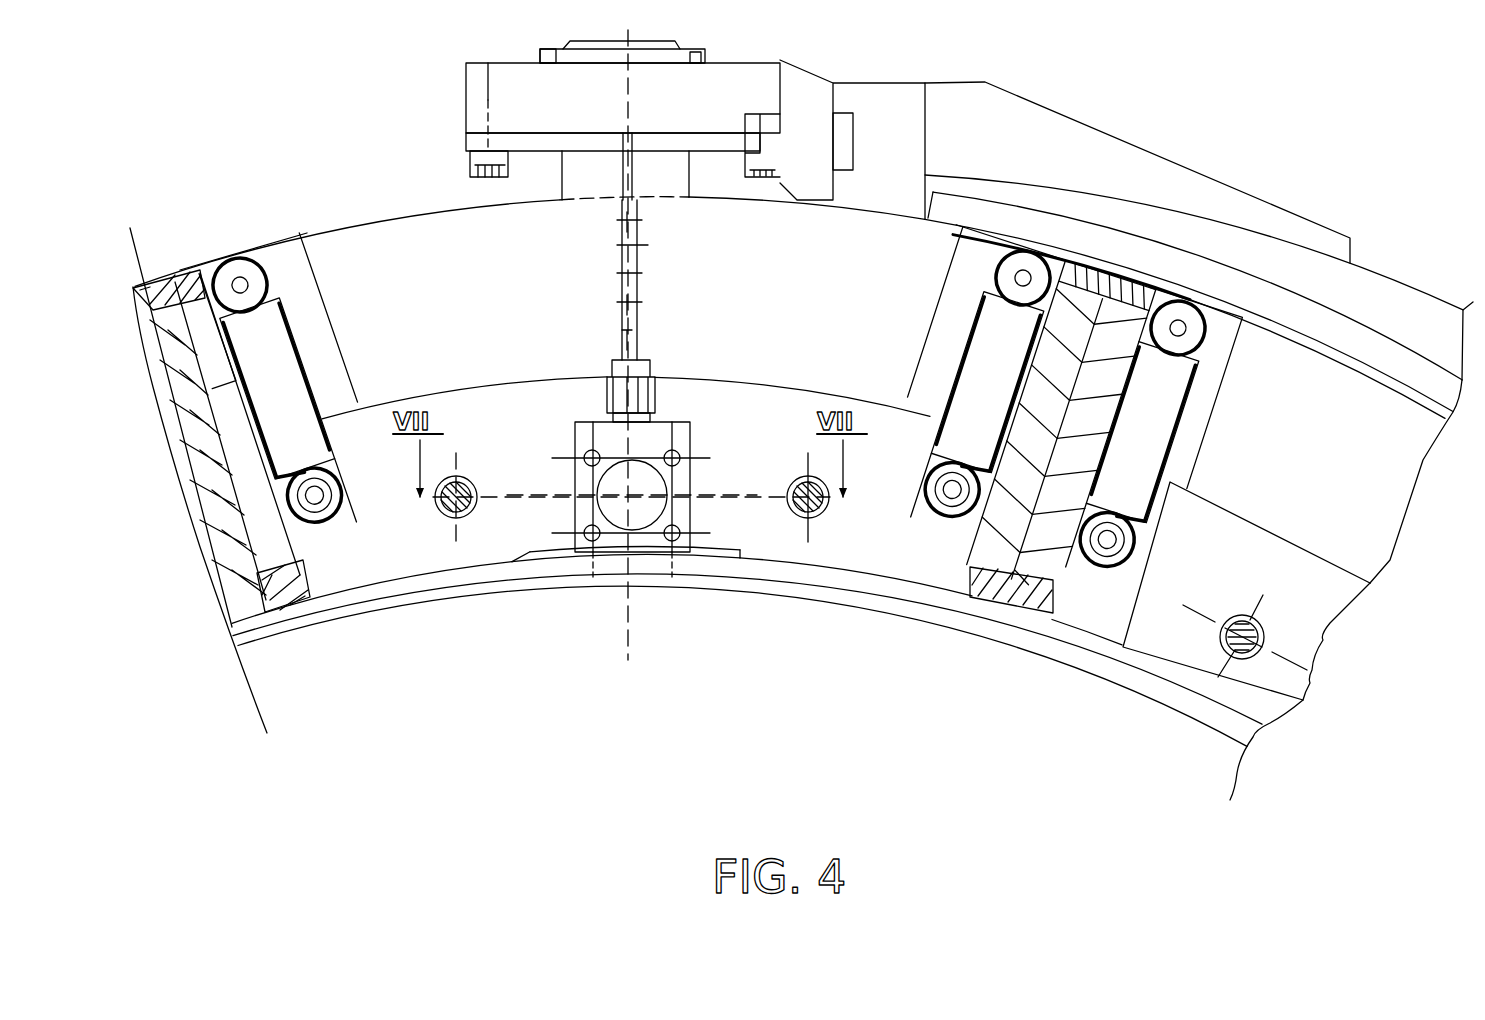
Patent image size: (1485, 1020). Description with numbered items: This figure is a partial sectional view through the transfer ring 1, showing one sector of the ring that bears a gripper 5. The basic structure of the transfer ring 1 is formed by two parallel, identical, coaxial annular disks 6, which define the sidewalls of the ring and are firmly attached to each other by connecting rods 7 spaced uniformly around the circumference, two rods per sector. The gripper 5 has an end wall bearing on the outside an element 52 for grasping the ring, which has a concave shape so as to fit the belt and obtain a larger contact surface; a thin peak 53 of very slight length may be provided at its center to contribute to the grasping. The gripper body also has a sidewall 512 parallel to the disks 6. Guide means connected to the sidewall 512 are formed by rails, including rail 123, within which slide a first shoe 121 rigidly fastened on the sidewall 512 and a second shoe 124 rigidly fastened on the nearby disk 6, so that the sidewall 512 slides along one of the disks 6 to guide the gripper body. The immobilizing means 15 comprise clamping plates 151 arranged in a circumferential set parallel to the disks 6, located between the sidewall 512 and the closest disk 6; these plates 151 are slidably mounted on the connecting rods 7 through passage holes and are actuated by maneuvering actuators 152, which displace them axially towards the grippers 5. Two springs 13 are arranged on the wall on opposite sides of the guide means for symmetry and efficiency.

The transfer ring 1 is at (346, 170).
The gripper 5 is at (297, 237).
The annular disk 6 is at (400, 228).
The connecting rod 7 is at (456, 513).
The spring 13 is at (977, 317).
The immobilizing means 15 is at (641, 554).
The element for grasping the ring 52 is at (512, 568).
The thin peak 53 is at (283, 631).
The first shoe 121 is at (1123, 330).
The rail 123 is at (1023, 557).
The second shoe 124 is at (1063, 572).
The clamping plate 151 is at (765, 545).
The maneuvering actuator 152 is at (775, 645).
The sidewall 512 is at (333, 580).